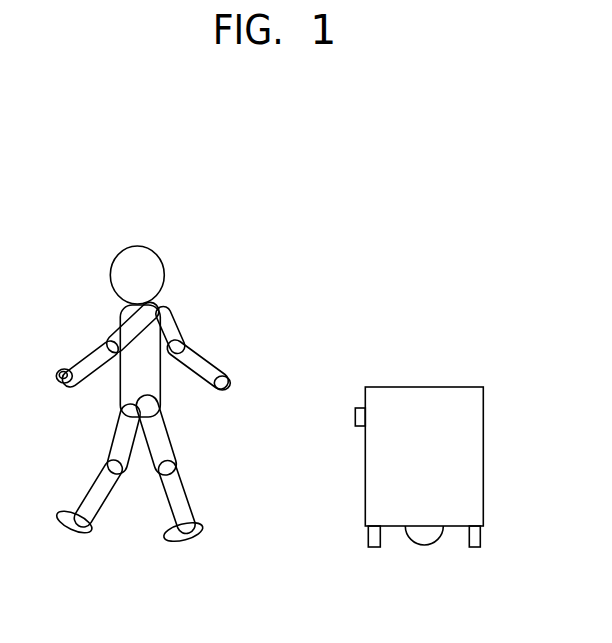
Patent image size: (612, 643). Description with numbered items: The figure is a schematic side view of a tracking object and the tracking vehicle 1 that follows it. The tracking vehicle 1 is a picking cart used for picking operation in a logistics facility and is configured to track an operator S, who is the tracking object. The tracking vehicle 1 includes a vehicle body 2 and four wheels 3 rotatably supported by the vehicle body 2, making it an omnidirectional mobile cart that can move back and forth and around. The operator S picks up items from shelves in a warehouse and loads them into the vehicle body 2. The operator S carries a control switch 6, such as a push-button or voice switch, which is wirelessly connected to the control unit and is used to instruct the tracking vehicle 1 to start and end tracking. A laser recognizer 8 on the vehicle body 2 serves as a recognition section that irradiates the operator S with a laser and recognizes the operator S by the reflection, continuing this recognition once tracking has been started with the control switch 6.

The operator S is at (135, 244).
The control switch 6 is at (58, 367).
The tracking vehicle 1 is at (472, 339).
The vehicle body 2 is at (420, 386).
The laser recognizer 8 is at (355, 407).
The wheels 3 is at (368, 538).